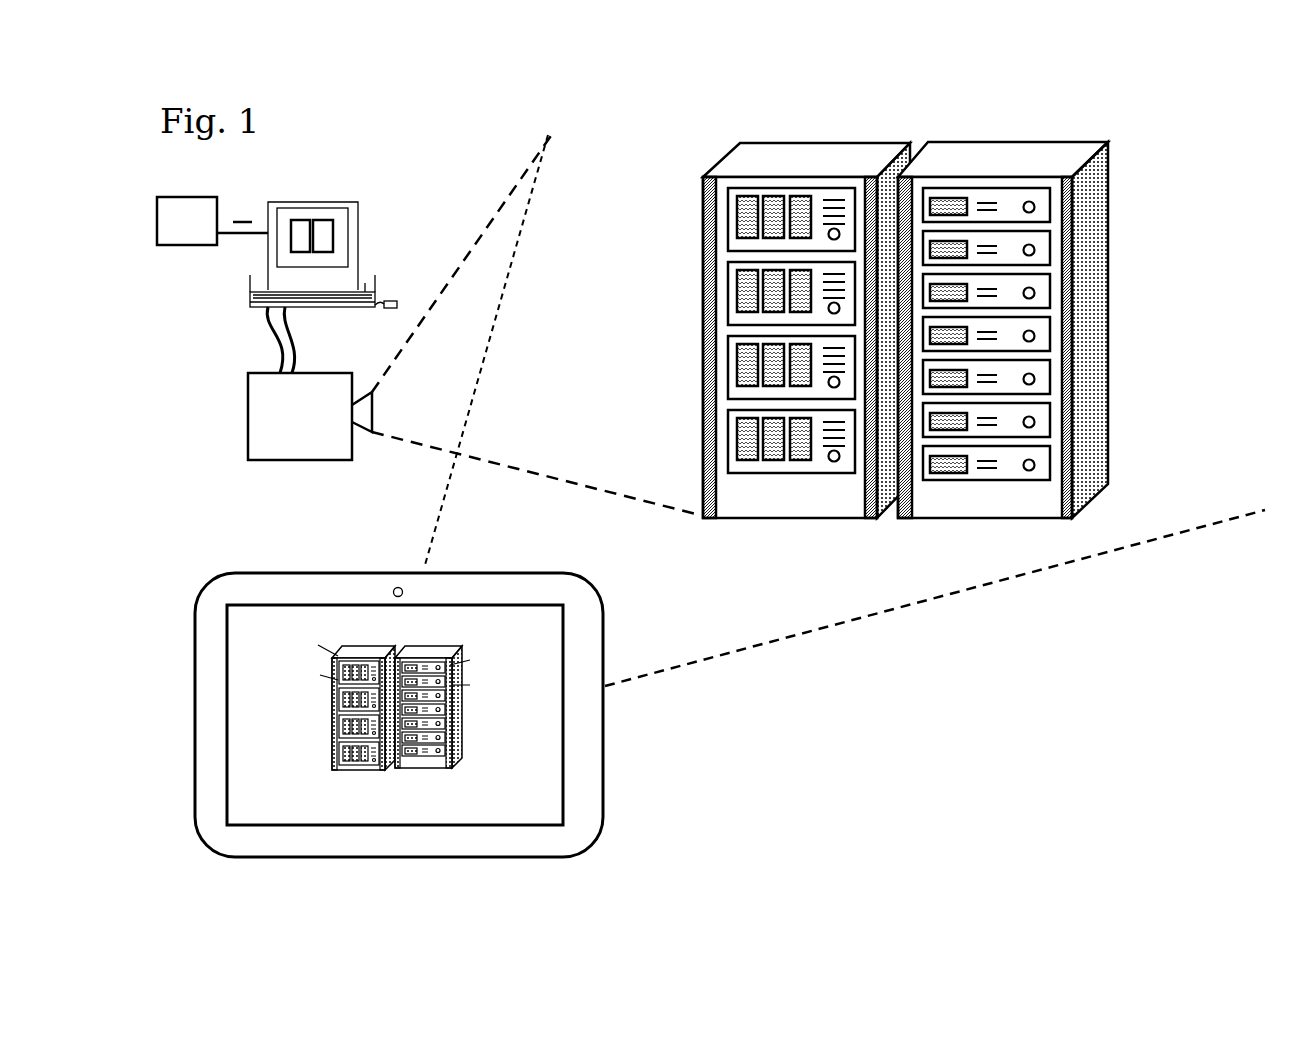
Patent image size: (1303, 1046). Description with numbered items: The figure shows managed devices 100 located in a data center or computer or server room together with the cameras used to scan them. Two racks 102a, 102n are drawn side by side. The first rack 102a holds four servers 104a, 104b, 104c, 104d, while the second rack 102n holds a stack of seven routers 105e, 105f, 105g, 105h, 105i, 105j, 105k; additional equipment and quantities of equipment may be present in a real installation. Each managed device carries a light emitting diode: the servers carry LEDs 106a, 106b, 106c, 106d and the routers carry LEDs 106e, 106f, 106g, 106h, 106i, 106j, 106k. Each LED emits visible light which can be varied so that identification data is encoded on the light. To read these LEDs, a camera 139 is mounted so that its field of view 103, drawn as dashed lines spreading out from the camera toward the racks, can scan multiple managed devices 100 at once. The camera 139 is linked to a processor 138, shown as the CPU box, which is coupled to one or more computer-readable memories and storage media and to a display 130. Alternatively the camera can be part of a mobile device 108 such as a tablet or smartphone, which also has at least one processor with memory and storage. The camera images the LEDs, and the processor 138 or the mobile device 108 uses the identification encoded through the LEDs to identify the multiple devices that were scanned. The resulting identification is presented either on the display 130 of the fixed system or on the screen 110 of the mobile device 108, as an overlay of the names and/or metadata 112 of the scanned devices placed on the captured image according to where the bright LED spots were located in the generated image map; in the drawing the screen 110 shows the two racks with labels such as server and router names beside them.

The managed devices 100 is at (436, 190).
The processor 138 is at (182, 197).
The display 130 is at (345, 250).
The camera 139 is at (285, 419).
The field of view 103 is at (395, 360).
The rack 102a is at (760, 337).
The rack 102n is at (1012, 340).
The server 104a is at (727, 220).
The server 104b is at (743, 292).
The server 104c is at (745, 370).
The server 104d is at (745, 445).
The light emitting diode 106a is at (832, 232).
The light emitting diode 106b is at (830, 308).
The light emitting diode 106c is at (830, 382).
The light emitting diode 106d is at (833, 460).
The router 105e is at (987, 203).
The router 105f is at (985, 247).
The router 105g is at (988, 292).
The router 105h is at (1002, 342).
The router 105i is at (1007, 380).
The router 105j is at (1003, 423).
The router 105k is at (1010, 463).
The light emitting diode 106e is at (1036, 207).
The light emitting diode 106f is at (1035, 253).
The light emitting diode 106g is at (1035, 296).
The light emitting diode 106h is at (1035, 339).
The light emitting diode 106i is at (1035, 382).
The light emitting diode 106j is at (1035, 425).
The light emitting diode 106k is at (1035, 468).
The mobile device 108 is at (426, 658).
The screen 110 is at (426, 702).
The names and/or metadata 112 is at (250, 643).